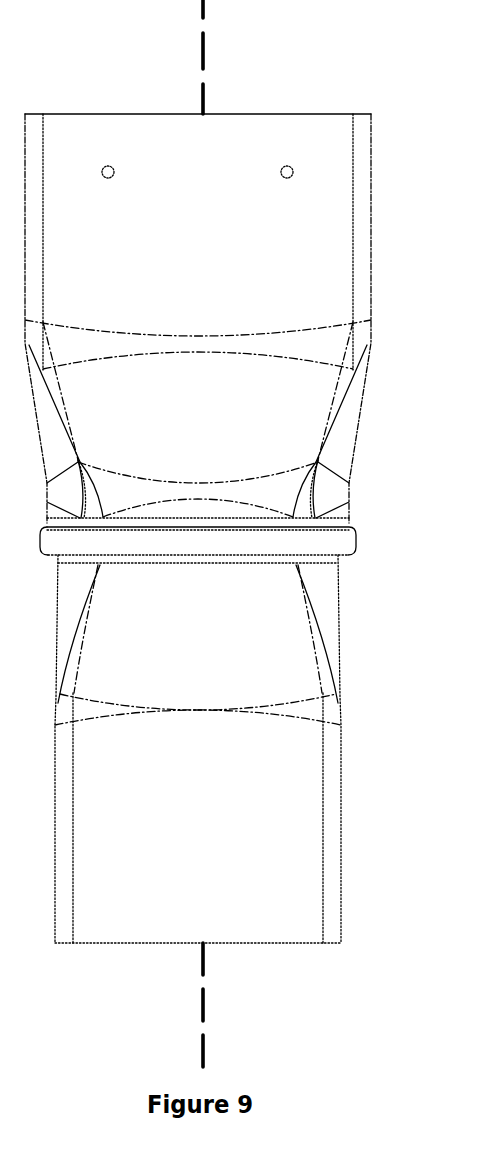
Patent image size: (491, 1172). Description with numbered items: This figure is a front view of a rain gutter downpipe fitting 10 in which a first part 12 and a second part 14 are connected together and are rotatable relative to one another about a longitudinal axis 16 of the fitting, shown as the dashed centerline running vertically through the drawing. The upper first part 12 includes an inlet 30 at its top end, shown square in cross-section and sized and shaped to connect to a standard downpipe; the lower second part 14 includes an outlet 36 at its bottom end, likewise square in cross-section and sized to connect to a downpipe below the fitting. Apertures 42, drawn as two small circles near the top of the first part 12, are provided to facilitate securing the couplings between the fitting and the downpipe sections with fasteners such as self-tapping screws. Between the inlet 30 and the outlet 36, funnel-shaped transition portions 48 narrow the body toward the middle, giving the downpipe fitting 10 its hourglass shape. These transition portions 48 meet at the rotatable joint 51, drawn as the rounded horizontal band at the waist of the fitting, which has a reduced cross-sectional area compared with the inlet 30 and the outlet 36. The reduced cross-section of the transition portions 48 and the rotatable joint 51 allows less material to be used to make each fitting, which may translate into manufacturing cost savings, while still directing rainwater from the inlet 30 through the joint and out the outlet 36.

The downpipe fitting 10 is at (229, 535).
The first part 12 is at (229, 288).
The second part 14 is at (231, 787).
The longitudinal axis 16 is at (203, 48).
The inlet 30 is at (152, 112).
The outlet 36 is at (153, 944).
The apertures 42 is at (113, 178).
The transition portions 48 is at (332, 427).
The rotatable joint 51 is at (352, 538).